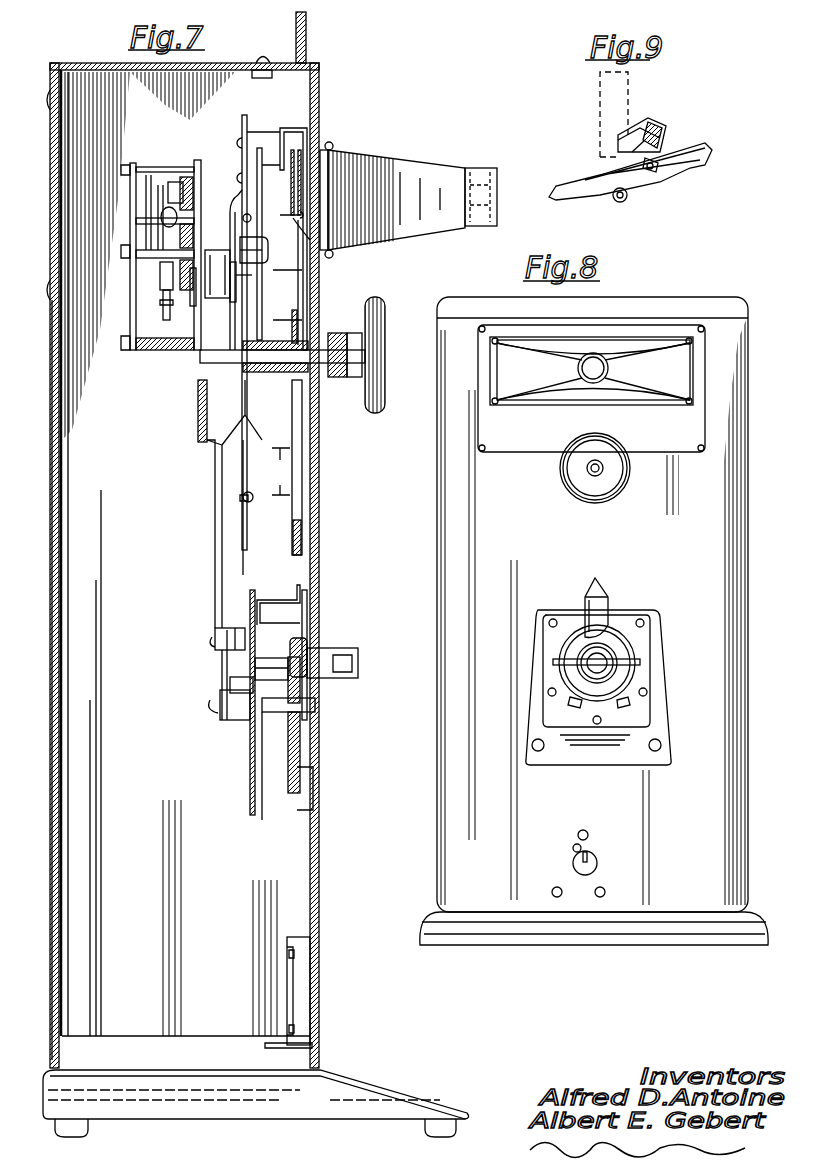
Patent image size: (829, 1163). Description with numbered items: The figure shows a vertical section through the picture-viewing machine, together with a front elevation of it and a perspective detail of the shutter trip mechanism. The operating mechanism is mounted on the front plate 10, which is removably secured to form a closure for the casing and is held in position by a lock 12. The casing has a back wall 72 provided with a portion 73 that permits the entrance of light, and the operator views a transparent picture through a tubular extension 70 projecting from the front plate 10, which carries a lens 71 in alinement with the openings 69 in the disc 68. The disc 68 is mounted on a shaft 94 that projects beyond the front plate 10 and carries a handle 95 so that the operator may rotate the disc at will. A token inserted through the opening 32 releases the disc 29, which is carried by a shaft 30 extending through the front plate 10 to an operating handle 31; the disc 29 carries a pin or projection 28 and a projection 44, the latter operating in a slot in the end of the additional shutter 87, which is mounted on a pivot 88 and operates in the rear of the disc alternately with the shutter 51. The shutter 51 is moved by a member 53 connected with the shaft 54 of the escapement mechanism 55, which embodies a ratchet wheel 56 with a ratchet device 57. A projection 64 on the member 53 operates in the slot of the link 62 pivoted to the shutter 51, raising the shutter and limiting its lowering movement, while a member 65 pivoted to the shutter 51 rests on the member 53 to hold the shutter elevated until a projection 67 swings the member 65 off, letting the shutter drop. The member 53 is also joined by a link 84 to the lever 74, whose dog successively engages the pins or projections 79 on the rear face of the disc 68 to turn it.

In FIG. 7, the front plate 10 is at (320, 542).
In FIG. 8, the front plate 10 is at (447, 783).
In FIG. 7, the lock 12 is at (296, 984).
In FIG. 7, the pin or projection 28 is at (235, 686).
In FIG. 7, the disc 29 is at (262, 720).
In FIG. 7, the shaft 30 is at (258, 668).
In FIG. 7, the operating handle 31 is at (350, 647).
In FIG. 8, the operating handle 31 is at (603, 657).
In FIG. 8, the opening 32 is at (605, 612).
In FIG. 7, the projection 44 is at (215, 635).
In FIG. 7, the shutter 51 is at (247, 132).
In FIG. 7, the member 53 is at (213, 282).
In FIG. 9, the member 53 is at (592, 186).
In FIG. 7, the shaft 54 is at (195, 296).
In FIG. 9, the shaft 54 is at (628, 198).
In FIG. 7, the escapement mechanism 55 is at (130, 200).
In FIG. 7, the ratchet wheel 56 is at (164, 318).
In FIG. 7, the ratchet device 57 is at (160, 265).
In FIG. 7, the link 62 is at (242, 184).
In FIG. 7, the projection 64 is at (243, 303).
In FIG. 7, the member 65 is at (243, 221).
In FIG. 9, the member 65 is at (630, 84).
In FIG. 7, the projection 67 is at (288, 212).
In FIG. 9, the projection 67 is at (657, 127).
In FIG. 7, the disc 68 is at (296, 467).
In FIG. 7, the openings 69 is at (293, 218).
In FIG. 7, the tubular extension 70 is at (393, 160).
In FIG. 8, the tubular extension 70 is at (652, 337).
In FIG. 7, the lens 71 is at (462, 172).
In FIG. 8, the lens 71 is at (594, 355).
In FIG. 7, the back wall 72 is at (52, 380).
In FIG. 7, the portion 73 is at (52, 206).
In FIG. 7, the lever 74 is at (226, 660).
In FIG. 7, the pins or projections 79 is at (274, 471).
In FIG. 7, the link 84 is at (215, 515).
In FIG. 7, the additional shutter 87 is at (242, 141).
In FIG. 7, the pivot 88 is at (251, 502).
In FIG. 7, the shaft 94 is at (318, 332).
In FIG. 7, the handle 95 is at (375, 410).
In FIG. 8, the handle 95 is at (570, 495).